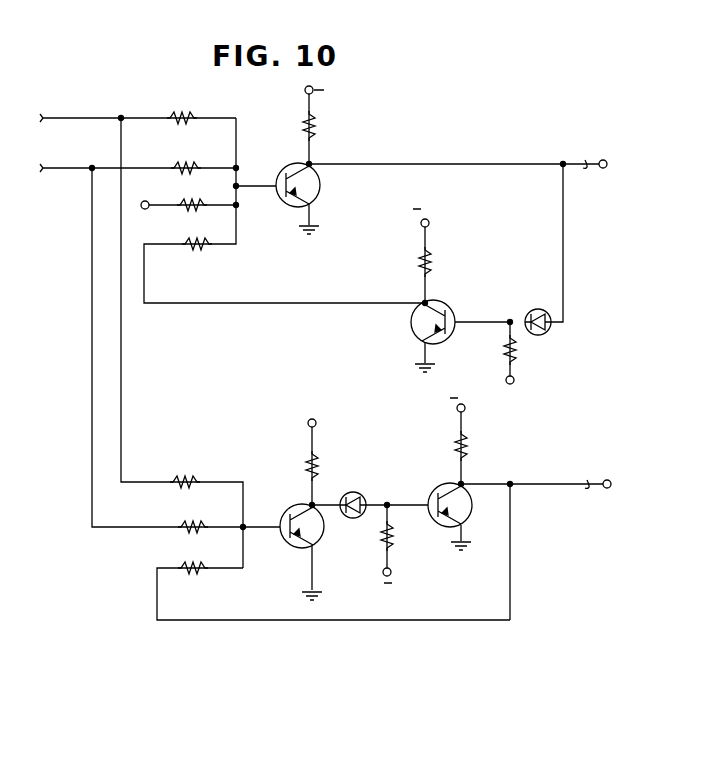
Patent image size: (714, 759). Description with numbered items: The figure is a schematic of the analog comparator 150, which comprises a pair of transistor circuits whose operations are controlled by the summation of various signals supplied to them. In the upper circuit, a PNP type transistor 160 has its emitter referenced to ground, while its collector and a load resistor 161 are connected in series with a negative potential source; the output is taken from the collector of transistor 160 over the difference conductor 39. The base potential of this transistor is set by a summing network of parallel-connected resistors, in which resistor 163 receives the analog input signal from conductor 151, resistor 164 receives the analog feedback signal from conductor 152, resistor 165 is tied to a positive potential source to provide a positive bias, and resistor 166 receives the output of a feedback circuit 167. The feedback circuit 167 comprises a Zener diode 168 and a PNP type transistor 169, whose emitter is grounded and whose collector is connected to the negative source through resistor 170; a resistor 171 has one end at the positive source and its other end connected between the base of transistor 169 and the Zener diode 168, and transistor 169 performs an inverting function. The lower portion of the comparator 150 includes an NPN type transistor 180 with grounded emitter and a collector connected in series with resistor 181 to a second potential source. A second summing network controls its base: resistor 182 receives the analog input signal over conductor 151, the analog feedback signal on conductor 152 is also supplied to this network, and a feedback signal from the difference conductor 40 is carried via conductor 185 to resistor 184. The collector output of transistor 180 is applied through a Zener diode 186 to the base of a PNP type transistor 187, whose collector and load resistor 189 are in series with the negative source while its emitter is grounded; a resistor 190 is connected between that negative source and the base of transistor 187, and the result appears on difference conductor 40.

The difference conductor 39 is at (587, 162).
The difference conductor 40 is at (535, 499).
The analog comparator 150 is at (466, 135).
The conductor 151 is at (131, 118).
The conductor 152 is at (160, 165).
The PNP type transistor 160 is at (316, 190).
The load resistor 161 is at (316, 131).
The resistor 163 is at (174, 114).
The resistor 164 is at (191, 164).
The resistor 165 is at (198, 202).
The resistor 166 is at (186, 242).
The feedback circuit 167 is at (492, 246).
The Zener diode 168 is at (540, 308).
The PNP type transistor 169 is at (452, 315).
The resistor 170 is at (421, 258).
The resistor 171 is at (504, 348).
The NPN type transistor 180 is at (302, 545).
The resistor 181 is at (308, 463).
The resistor 182 is at (192, 478).
The resistor 184 is at (185, 531).
The conductor 185 is at (490, 618).
The Zener diode 186 is at (361, 493).
The PNP type transistor 187 is at (467, 506).
The load resistor 189 is at (467, 449).
The resistor 190 is at (385, 546).